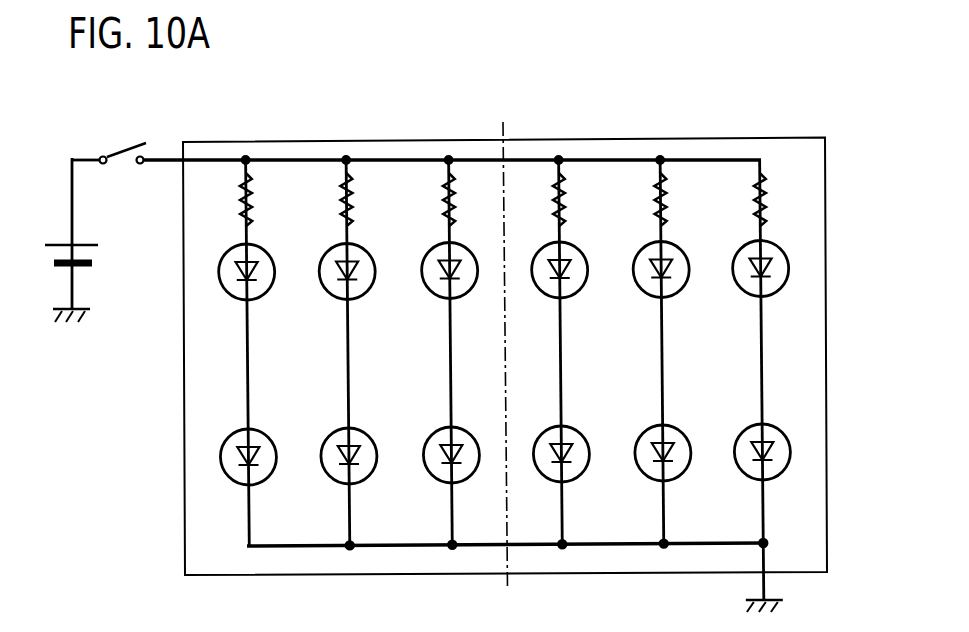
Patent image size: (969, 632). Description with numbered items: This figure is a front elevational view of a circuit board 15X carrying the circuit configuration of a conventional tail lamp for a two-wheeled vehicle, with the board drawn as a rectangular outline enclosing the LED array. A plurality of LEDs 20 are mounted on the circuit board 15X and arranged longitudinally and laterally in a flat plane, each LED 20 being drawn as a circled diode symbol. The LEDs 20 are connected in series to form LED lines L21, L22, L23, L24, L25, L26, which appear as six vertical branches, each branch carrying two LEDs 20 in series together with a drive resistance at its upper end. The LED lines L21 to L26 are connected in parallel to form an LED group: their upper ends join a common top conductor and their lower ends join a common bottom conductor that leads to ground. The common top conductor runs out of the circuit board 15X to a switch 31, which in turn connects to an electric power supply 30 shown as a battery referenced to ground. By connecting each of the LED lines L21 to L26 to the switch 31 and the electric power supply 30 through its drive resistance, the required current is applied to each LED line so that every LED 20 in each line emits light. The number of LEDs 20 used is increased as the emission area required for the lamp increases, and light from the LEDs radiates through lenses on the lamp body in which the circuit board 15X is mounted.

The circuit board 15X is at (805, 517).
The LED 20 is at (773, 435).
The electric power supply 30 is at (82, 238).
The switch 31 is at (121, 146).
The LED line L21 is at (230, 501).
The LED line L22 is at (334, 499).
The LED line L23 is at (441, 489).
The LED line L24 is at (553, 491).
The LED line L25 is at (646, 489).
The LED line L26 is at (777, 389).